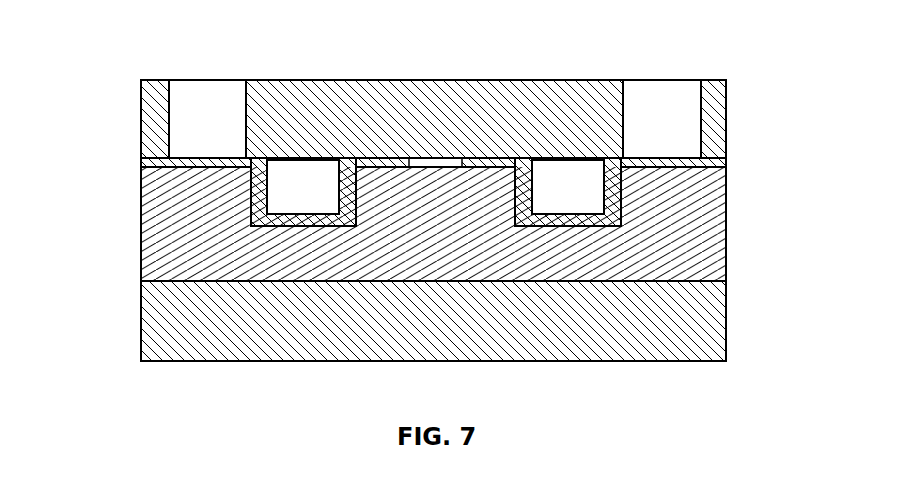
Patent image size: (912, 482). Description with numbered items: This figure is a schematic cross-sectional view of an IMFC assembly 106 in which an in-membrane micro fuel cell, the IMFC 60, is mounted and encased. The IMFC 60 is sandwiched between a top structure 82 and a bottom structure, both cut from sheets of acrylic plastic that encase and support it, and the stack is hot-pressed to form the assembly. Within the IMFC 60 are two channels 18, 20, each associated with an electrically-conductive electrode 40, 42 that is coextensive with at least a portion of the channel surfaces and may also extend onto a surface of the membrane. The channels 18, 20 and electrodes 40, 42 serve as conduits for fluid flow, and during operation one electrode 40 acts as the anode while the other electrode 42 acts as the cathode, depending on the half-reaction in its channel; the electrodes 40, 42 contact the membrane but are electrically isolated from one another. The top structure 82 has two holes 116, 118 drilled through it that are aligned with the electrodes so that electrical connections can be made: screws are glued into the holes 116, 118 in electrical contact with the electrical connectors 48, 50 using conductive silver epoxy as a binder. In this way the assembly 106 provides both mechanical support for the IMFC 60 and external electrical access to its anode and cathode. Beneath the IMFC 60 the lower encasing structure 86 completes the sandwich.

The IMFC assembly 106 is at (146, 46).
The hole for electrical connection 116 is at (204, 92).
The hole for electrical connection 118 is at (677, 91).
The top structure 82 is at (727, 120).
The electrical connector 48 is at (141, 163).
The electrical connector 50 is at (727, 164).
The IMFC 60 is at (727, 197).
The electrode 40 is at (252, 181).
The electrode 42 is at (621, 179).
The substrate 86 is at (727, 331).
The channel 18 is at (312, 226).
The channel 20 is at (568, 226).